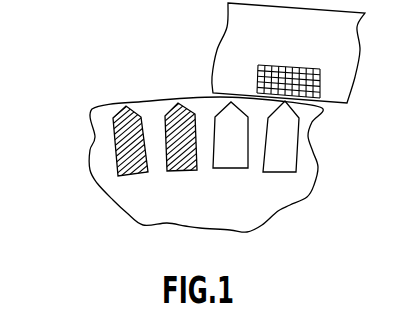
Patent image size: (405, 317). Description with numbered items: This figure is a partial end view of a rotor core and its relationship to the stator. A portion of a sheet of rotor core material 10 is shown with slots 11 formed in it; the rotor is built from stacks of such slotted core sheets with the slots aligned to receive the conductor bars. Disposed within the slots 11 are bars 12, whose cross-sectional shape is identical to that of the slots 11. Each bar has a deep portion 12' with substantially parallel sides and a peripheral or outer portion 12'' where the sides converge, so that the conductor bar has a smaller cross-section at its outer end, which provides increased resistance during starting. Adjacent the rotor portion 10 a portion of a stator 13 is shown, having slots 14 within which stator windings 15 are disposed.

The sheet of rotor core material 10 is at (307, 197).
The slots 11 is at (300, 152).
The bars 12 is at (173, 133).
The deep portion 12' is at (84, 141).
The peripheral or outer portion 12'' is at (128, 136).
The stator 13 is at (355, 80).
The slots 14 is at (277, 65).
The stator windings 15 is at (303, 74).